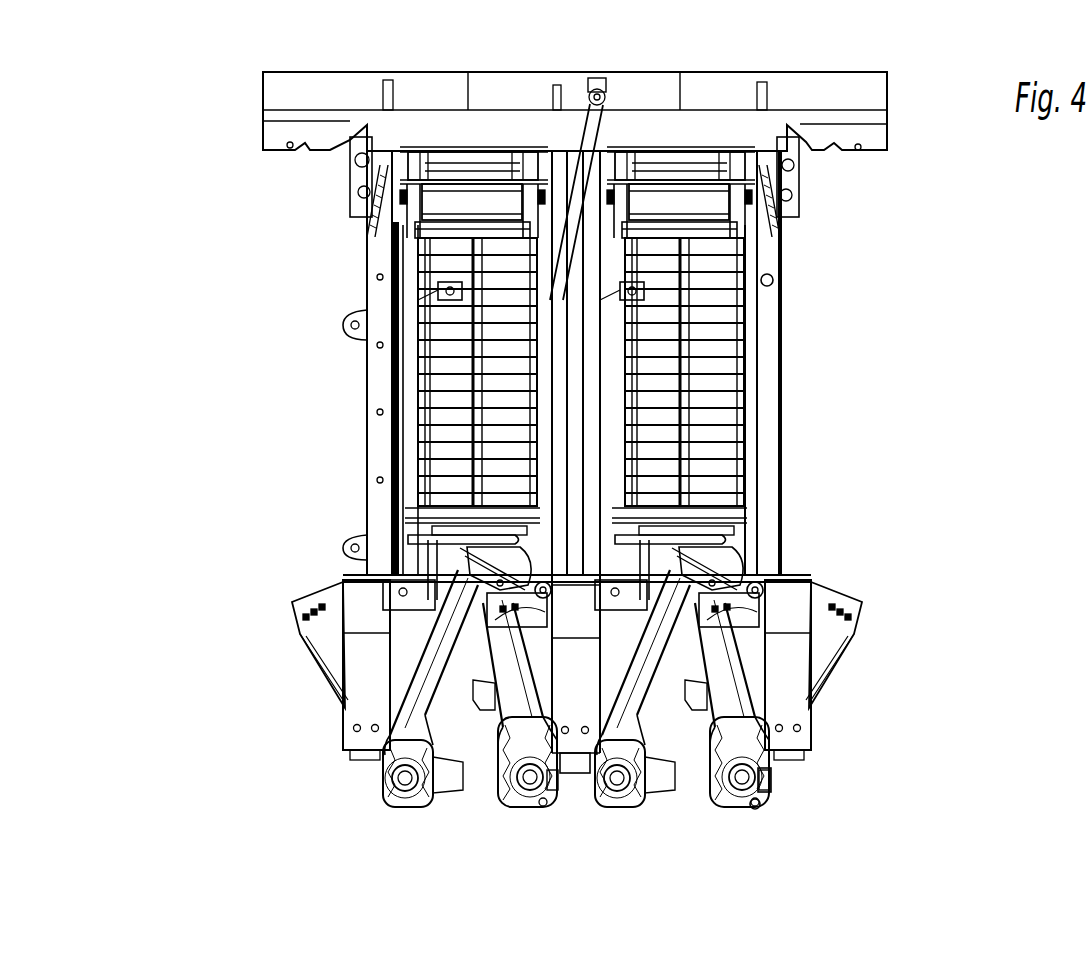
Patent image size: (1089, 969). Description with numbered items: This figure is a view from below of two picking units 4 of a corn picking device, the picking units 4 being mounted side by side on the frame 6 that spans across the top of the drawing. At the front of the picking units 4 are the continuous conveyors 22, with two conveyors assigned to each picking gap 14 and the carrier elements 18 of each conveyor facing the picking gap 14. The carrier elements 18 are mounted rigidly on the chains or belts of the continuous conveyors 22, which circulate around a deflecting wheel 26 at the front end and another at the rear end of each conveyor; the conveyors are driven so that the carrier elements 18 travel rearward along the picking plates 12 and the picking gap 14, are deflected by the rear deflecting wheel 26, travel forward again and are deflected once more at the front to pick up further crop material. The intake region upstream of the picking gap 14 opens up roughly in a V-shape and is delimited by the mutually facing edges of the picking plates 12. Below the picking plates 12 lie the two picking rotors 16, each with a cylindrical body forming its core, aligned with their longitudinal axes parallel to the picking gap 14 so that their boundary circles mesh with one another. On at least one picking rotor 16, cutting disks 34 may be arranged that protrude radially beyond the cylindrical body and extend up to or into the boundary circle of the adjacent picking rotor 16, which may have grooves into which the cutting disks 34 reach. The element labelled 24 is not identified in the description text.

The picking unit 4 is at (158, 330).
The frame 6 is at (293, 72).
The picking plate 12 is at (570, 673).
The picking gap 14 is at (385, 572).
The picking rotor 16 is at (490, 400).
The carrier element 18 is at (570, 736).
The continuous conveyor 22 is at (470, 815).
The wheel housing 24 is at (750, 797).
The deflecting wheel 26 is at (755, 808).
The cutting disk 34 is at (622, 297).